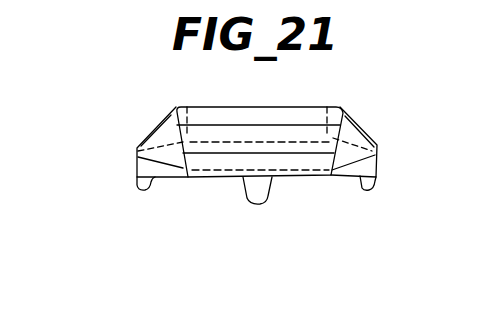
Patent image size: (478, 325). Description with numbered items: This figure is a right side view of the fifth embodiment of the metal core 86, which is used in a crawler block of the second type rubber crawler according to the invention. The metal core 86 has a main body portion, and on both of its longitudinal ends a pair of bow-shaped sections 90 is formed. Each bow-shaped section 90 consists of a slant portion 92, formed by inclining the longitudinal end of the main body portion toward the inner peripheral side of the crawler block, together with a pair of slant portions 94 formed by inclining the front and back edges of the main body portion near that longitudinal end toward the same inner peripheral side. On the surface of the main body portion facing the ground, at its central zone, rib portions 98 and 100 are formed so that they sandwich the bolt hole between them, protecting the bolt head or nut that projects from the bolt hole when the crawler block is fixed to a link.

The metal core 86 is at (337, 100).
The bow-shaped section 90 is at (370, 128).
The slant portion 92 is at (225, 160).
The slant portion 94 is at (148, 143).
The rib portion 98 is at (137, 181).
The rib portion 100 is at (266, 192).